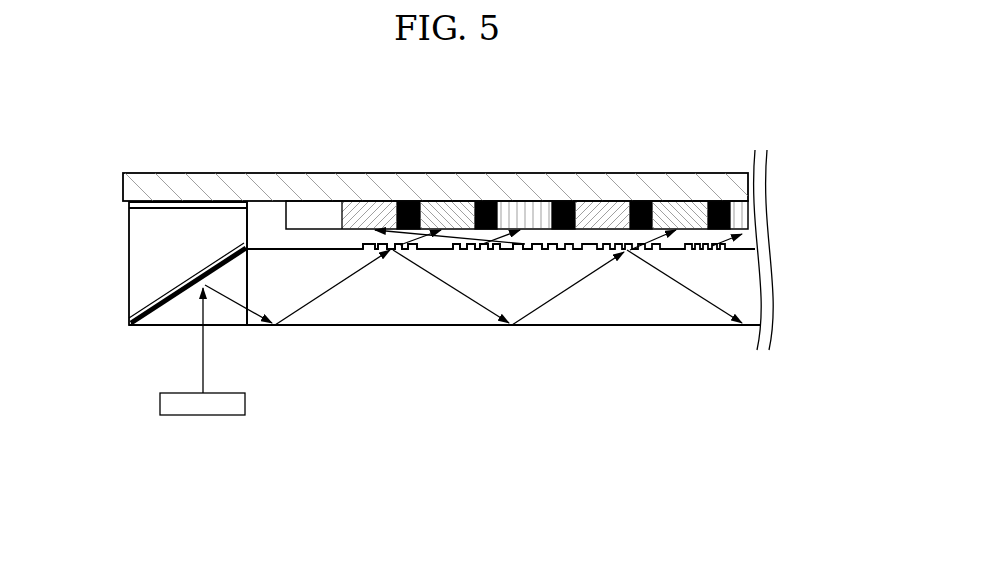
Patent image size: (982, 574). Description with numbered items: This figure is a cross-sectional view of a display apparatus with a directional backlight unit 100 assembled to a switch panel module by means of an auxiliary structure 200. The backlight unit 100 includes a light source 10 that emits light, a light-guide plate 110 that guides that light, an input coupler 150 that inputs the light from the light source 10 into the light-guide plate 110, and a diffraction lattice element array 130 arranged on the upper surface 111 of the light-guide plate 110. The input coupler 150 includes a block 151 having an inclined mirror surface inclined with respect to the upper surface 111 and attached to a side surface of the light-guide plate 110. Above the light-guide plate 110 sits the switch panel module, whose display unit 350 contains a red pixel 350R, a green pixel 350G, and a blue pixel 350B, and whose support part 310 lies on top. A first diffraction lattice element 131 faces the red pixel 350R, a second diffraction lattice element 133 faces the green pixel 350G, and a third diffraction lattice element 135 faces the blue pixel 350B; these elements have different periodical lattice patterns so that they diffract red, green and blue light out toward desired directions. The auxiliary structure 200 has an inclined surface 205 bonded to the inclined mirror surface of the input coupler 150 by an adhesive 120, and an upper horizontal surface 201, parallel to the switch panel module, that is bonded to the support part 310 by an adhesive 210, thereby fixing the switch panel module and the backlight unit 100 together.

The backlight unit 100 is at (655, 336).
The light source 10 is at (218, 415).
The light-guide plate 110 is at (745, 295).
The upper surface 111 is at (272, 248).
The adhesive 120 is at (197, 275).
The diffraction lattice element array 130 is at (501, 331).
The first diffraction lattice element 131 is at (548, 251).
The second diffraction lattice element 133 is at (403, 251).
The third diffraction lattice element 135 is at (470, 251).
The input coupler 150 is at (163, 309).
The block 151 is at (225, 318).
The auxiliary structure 200 is at (130, 242).
The upper horizontal surface 201 is at (150, 206).
The inclined surface 205 is at (148, 312).
The adhesive 210 is at (188, 206).
The support part 310 is at (745, 190).
The display unit 350 is at (571, 168).
The red pixel 350R is at (370, 206).
The green pixel 350G is at (450, 206).
The blue pixel 350B is at (530, 206).